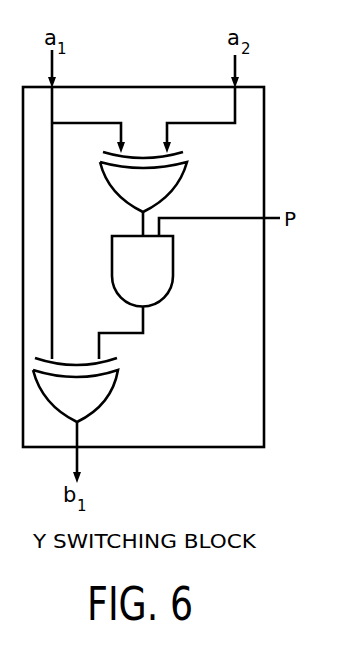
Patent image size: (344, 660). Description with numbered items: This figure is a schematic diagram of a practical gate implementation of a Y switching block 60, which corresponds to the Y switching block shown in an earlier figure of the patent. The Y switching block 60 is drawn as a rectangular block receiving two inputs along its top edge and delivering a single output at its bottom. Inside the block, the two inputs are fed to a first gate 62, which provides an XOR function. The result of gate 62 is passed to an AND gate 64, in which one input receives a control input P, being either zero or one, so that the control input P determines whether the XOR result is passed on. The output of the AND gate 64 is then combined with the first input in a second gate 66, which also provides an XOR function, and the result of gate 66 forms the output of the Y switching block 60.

The Y switching block 60 is at (265, 133).
The XOR gate 62 is at (178, 193).
The AND gate 64 is at (176, 280).
The XOR gate 66 is at (110, 393).